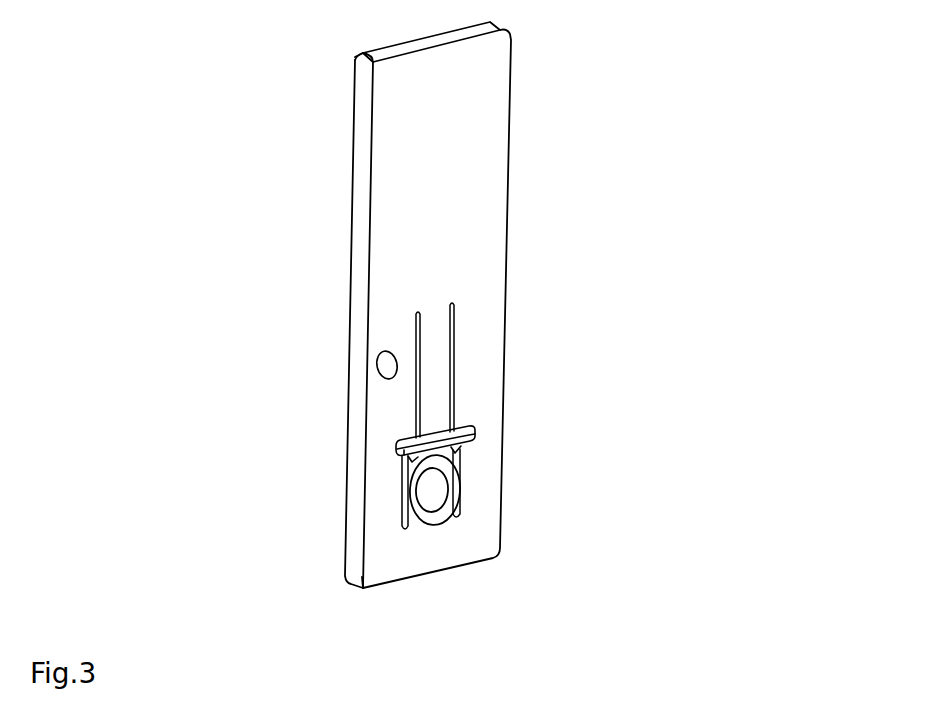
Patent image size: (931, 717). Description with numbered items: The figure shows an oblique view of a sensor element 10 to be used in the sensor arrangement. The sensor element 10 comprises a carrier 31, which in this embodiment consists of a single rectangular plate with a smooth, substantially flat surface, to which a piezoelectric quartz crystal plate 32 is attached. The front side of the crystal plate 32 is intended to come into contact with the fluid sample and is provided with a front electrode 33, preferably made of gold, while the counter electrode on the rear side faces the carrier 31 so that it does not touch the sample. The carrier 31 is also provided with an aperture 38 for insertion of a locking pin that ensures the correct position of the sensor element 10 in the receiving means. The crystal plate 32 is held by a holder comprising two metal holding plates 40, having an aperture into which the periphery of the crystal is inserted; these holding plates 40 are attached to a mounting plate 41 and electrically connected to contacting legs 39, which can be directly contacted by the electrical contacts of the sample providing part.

The sensor element 10 is at (566, 85).
The carrier 31 is at (466, 182).
The piezoelectric quartz crystal plate 32 is at (451, 467).
The front electrode 33 is at (432, 497).
The aperture 38 is at (381, 356).
The contacting legs 39 is at (418, 375).
The metal holding plates 40 is at (407, 525).
The mounting plate 41 is at (407, 448).